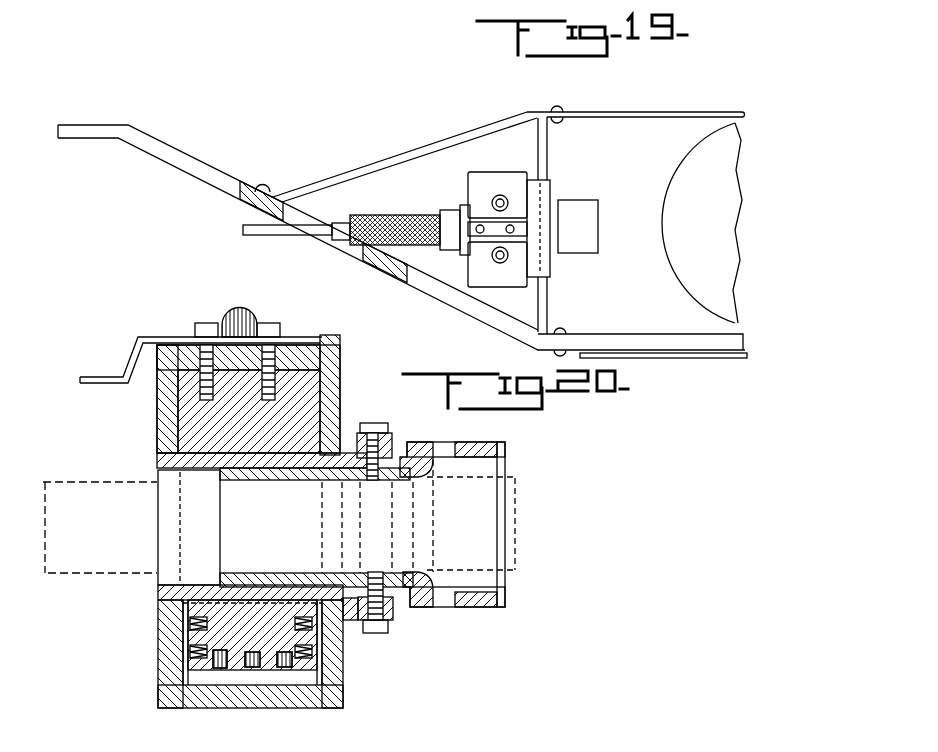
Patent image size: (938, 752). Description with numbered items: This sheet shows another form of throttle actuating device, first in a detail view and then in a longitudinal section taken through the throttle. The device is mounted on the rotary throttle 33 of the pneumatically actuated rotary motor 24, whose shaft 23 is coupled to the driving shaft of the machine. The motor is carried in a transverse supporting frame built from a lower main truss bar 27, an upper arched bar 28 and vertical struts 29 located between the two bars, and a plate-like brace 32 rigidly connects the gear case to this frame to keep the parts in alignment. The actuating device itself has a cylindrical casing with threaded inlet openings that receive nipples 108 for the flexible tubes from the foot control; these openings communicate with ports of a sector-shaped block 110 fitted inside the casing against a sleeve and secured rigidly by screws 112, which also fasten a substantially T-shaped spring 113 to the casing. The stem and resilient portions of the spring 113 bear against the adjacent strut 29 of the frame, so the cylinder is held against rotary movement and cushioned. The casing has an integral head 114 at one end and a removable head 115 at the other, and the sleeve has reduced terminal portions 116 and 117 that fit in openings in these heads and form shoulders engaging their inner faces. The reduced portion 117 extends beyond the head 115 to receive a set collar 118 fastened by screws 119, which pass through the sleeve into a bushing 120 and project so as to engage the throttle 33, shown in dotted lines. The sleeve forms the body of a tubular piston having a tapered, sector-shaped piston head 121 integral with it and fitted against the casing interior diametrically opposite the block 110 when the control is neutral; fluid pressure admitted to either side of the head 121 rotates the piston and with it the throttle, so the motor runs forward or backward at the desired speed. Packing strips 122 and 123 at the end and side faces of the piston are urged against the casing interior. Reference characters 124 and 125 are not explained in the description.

In FIG. 20, the shaft 23 is at (343, 650).
In FIG. 19, the motor 24 is at (650, 223).
In FIG. 19, the main truss bar 27 is at (650, 354).
In FIG. 19, the arched bar 28 is at (592, 108).
In FIG. 19, the vertical strut 29 is at (545, 304).
In FIG. 19, the brace 32 is at (733, 357).
In FIG. 19, the rotary throttle 33 is at (357, 245).
In FIG. 20, the rotary throttle 33 is at (72, 578).
In FIG. 19, the nipple 108 is at (507, 200).
In FIG. 20, the nipple 108 is at (380, 746).
In FIG. 20, the block 110 is at (340, 362).
In FIG. 20, the screw 112 is at (268, 378).
In FIG. 19, the spring 113 is at (497, 225).
In FIG. 20, the spring 113 is at (180, 340).
In FIG. 20, the integral head 114 is at (165, 672).
In FIG. 19, the removable head 115 is at (473, 263).
In FIG. 20, the removable head 115 is at (343, 380).
In FIG. 20, the reduced terminal portion 116 is at (158, 478).
In FIG. 20, the reduced terminal portion 117 is at (333, 480).
In FIG. 20, the set collar 118 is at (395, 446).
In FIG. 20, the screw 119 is at (368, 430).
In FIG. 20, the bushing 120 is at (367, 572).
In FIG. 20, the piston head 121 is at (365, 636).
In FIG. 20, the packing strip 122 is at (178, 706).
In FIG. 20, the packing strip 123 is at (325, 670).
In FIG. 20, the inner block 124 is at (222, 672).
In FIG. 20, the spring 125 is at (192, 628).